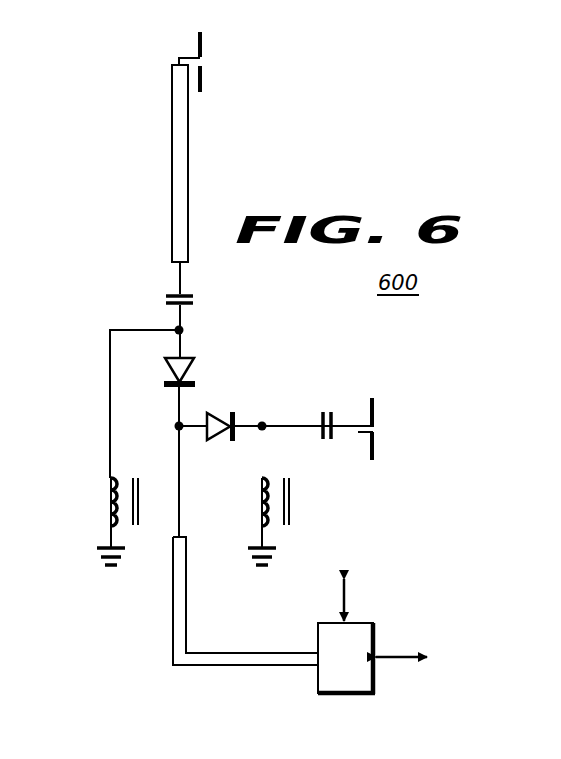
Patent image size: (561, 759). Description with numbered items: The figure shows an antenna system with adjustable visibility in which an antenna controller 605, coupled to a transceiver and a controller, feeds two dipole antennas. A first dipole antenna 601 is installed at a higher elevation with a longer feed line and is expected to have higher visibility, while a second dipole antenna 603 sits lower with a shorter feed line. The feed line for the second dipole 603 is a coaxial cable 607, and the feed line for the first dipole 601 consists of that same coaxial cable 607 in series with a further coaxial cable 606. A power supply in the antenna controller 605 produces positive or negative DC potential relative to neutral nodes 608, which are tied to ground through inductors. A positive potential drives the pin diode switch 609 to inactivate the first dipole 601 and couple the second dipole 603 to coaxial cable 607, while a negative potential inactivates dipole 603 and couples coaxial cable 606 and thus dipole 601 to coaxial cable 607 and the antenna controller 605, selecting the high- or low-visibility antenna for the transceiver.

The first dipole antenna 601 is at (201, 45).
The second dipole antenna 603 is at (374, 412).
The antenna controller 605 is at (373, 622).
The coaxial cable 606 is at (189, 172).
The coaxial cable 607 is at (188, 597).
The neutral nodes 608 is at (110, 547).
The pin diode switch 609 is at (237, 377).